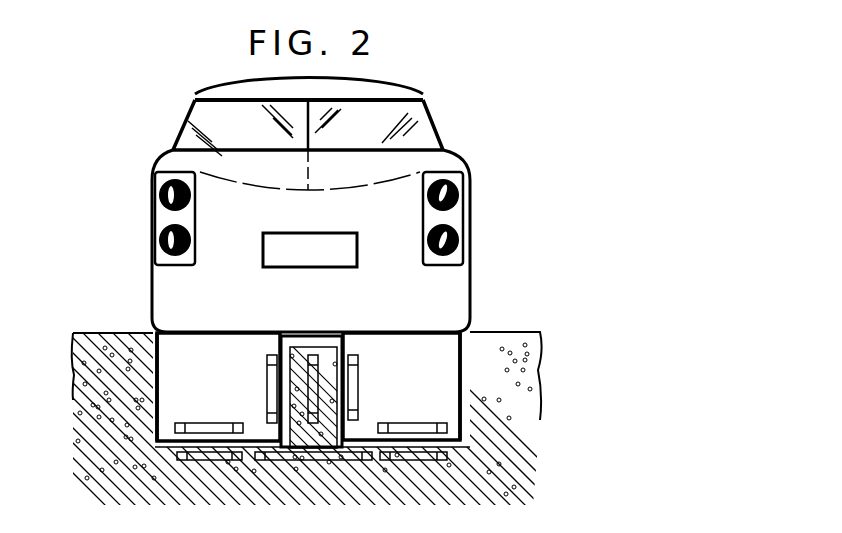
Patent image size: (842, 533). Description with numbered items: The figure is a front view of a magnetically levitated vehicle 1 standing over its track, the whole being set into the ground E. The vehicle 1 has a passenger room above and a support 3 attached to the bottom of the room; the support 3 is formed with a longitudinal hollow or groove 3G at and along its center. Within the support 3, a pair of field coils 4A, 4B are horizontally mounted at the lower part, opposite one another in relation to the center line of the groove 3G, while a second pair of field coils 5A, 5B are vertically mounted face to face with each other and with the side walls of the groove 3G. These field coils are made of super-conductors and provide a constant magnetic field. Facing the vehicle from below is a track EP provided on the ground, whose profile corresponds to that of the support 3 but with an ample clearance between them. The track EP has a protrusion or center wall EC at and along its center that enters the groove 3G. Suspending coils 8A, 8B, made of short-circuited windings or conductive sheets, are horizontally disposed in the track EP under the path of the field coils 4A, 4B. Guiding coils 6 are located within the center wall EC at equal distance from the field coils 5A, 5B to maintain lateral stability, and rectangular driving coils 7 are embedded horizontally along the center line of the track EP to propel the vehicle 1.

The magnetically levitated vehicle 1 is at (465, 283).
The support 3 is at (447, 379).
The longitudinal groove 3G is at (284, 430).
The field coil 4A is at (220, 422).
The field coil 4B is at (427, 422).
The field coil 5A is at (266, 372).
The field coil 5B is at (358, 380).
The guiding coil 6 is at (310, 383).
The driving coil 7 is at (318, 462).
The suspending coil 8A is at (208, 461).
The suspending coil 8B is at (418, 461).
The center wall EC is at (350, 461).
The track EP is at (157, 405).
The earth / ground E is at (499, 330).